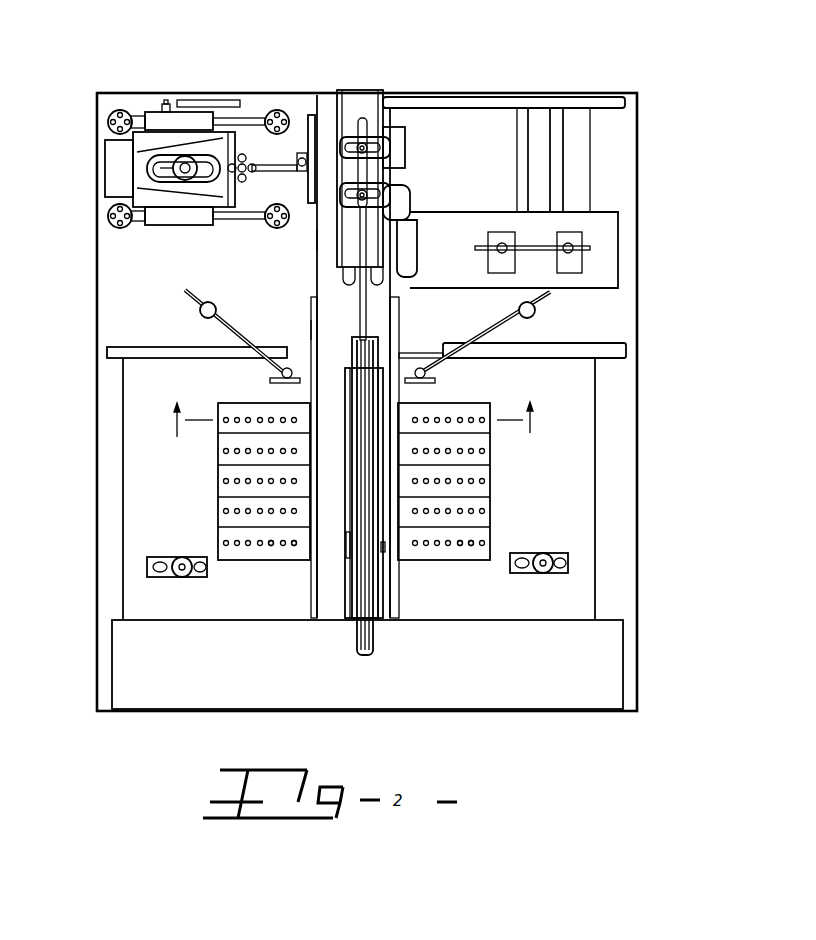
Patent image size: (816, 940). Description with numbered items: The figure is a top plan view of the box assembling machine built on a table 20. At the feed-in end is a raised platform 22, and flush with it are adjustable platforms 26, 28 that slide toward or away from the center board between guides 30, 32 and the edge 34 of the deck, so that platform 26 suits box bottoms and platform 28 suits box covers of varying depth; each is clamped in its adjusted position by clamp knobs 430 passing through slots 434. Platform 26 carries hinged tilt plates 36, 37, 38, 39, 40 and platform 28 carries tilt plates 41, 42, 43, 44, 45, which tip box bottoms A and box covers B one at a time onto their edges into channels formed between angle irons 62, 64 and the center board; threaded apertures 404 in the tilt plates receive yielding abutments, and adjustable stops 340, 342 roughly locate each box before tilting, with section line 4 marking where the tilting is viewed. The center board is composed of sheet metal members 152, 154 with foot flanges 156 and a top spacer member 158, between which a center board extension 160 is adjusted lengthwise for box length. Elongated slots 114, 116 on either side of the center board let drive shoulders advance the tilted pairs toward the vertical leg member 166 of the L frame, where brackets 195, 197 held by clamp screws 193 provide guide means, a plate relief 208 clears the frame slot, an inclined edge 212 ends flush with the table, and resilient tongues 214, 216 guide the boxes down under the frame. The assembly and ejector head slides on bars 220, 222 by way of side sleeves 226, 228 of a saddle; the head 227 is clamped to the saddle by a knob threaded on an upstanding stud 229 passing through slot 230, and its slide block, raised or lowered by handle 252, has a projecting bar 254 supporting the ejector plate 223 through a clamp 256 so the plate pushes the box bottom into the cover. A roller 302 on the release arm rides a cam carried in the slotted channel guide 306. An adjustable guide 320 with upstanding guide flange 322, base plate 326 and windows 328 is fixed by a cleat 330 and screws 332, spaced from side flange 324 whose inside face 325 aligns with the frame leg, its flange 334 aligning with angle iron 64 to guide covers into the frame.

The table 20 is at (97, 318).
The raised platform 22 is at (335, 688).
The adjustable platform 26 is at (130, 472).
The adjustable platform 28 is at (577, 445).
The guide 30 is at (160, 347).
The guide 32 is at (558, 343).
The edge of raised deck 34 is at (202, 619).
The tilt plate 36 is at (218, 409).
The tilt plate 37 is at (222, 443).
The tilt plate 38 is at (222, 483).
The tilt plate 39 is at (222, 503).
The tilt plate 40 is at (248, 550).
The tilt plate 41 is at (480, 408).
The tilt plate 42 is at (484, 439).
The tilt plate 43 is at (486, 472).
The tilt plate 44 is at (484, 515).
The tilt plate 45 is at (484, 533).
The section line 4- 4 is at (354, 430).
The angle iron 62 is at (311, 327).
The angle iron 64 is at (399, 323).
The elongated slot 114 is at (348, 550).
The elongated slot 116 is at (383, 546).
The sheet metal member 152 is at (357, 597).
The sheet metal member 154 is at (378, 588).
The foot flange 156 is at (378, 602).
The spacer member 158 is at (355, 351).
The center board extension 160 is at (362, 302).
The vertical leg member 166 is at (358, 92).
The clamp screw 193 is at (365, 147).
The bracket 195 is at (393, 140).
The bracket 197 is at (402, 200).
The relief 208 is at (330, 242).
The inclined edge 212 is at (311, 318).
The resilient tongue 214 is at (350, 277).
The resilient tongue 216 is at (386, 283).
The bar 220 is at (243, 118).
The bar 222 is at (253, 221).
The ejector plate 223 is at (311, 113).
The side sleeve 226 is at (192, 112).
The head 227 is at (177, 195).
The side sleeve / threaded knob 228 is at (173, 150).
The upstanding stud 229 is at (187, 178).
The slot 230 is at (180, 168).
The handle 252 is at (246, 176).
The projecting bar 254 is at (268, 167).
The clamp 256 is at (297, 158).
The roller 302 is at (165, 103).
The slotted channel guide 306 is at (213, 100).
The adjustable guide 320 is at (603, 231).
The upstanding guide flange 322 is at (603, 213).
The side flange 324 is at (527, 97).
The inside face 325 is at (443, 108).
The base plate 326 is at (449, 266).
The window 328 is at (564, 265).
The cleat 330 is at (540, 238).
The screw 332 is at (496, 247).
The flange 334 is at (410, 246).
The adjustable stop 340 is at (230, 322).
The adjustable stop 342 is at (487, 333).
The threaded aperture 404 is at (293, 548).
The clamp knob 430 is at (180, 557).
The slot 434 is at (165, 572).
The box bottom A is at (525, 146).
The box cover B is at (540, 166).